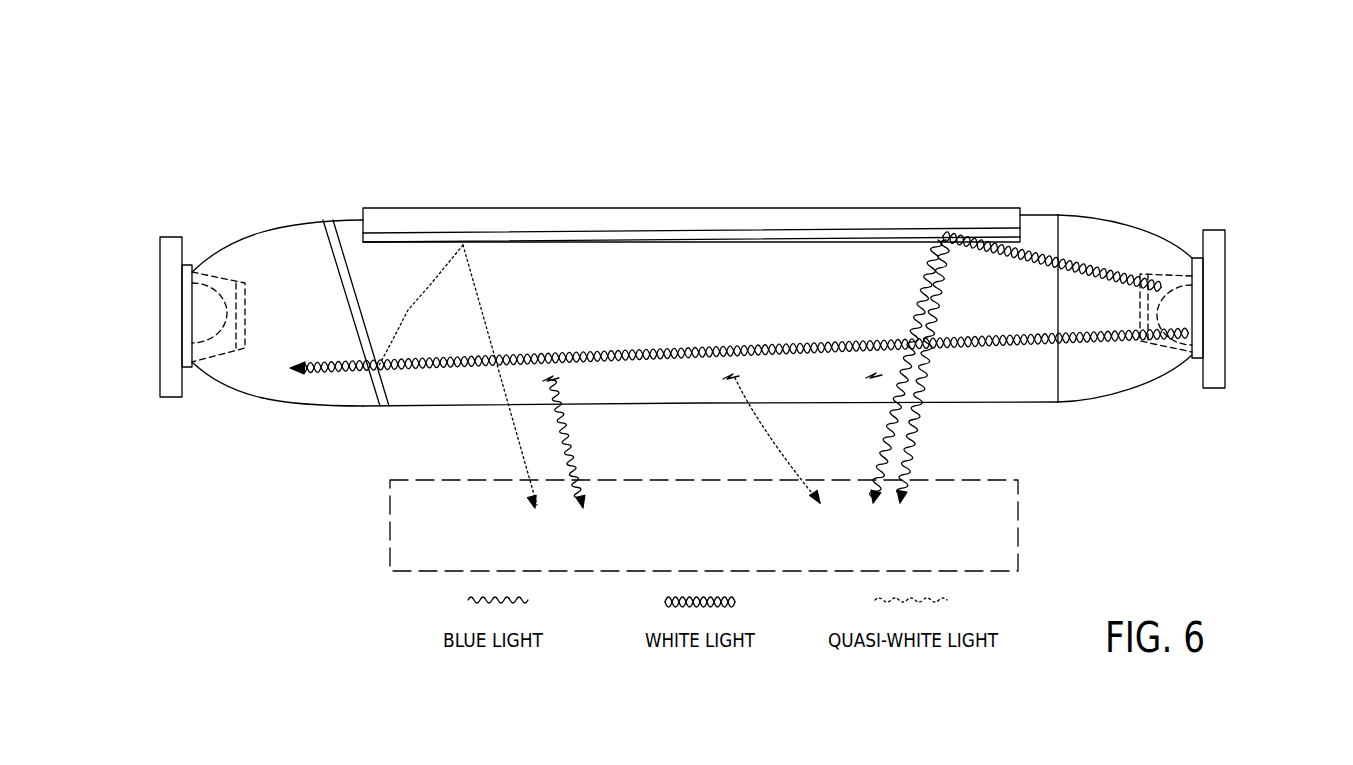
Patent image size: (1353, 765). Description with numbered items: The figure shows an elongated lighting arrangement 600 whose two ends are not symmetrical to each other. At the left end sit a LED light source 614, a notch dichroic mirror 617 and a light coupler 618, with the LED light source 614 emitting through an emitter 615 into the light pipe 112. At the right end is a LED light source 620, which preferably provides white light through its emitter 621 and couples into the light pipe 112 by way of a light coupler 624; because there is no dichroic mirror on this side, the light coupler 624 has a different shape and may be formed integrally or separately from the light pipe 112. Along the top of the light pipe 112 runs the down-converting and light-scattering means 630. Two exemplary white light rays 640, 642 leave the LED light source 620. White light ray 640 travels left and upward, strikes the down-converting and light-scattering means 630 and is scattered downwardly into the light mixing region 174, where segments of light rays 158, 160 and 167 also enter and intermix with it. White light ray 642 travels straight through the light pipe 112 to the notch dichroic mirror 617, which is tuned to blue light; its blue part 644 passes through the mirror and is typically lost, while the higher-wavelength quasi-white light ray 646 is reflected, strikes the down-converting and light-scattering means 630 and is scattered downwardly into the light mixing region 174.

The elongated lighting arrangement 600 is at (518, 177).
The light pipe 112 is at (652, 287).
The LED light source 614 is at (148, 266).
The blue LED emitter 615 is at (207, 342).
The notch dichroic mirror 617 is at (322, 238).
The light coupler 618 is at (262, 250).
The down-converting and light-scattering means 630 is at (612, 205).
The LED light source 620 is at (1243, 307).
The white LED emitter 621 is at (1180, 337).
The light coupler 624 is at (1125, 252).
The white light ray 640 is at (1037, 267).
The white light ray 642 is at (850, 337).
The blue part of white light ray 644 is at (312, 377).
The quasi-white light ray 646 is at (407, 318).
The light ray 160 is at (570, 450).
The light ray 158 is at (767, 425).
The light ray 167 is at (880, 388).
The light mixing region 174 is at (704, 525).